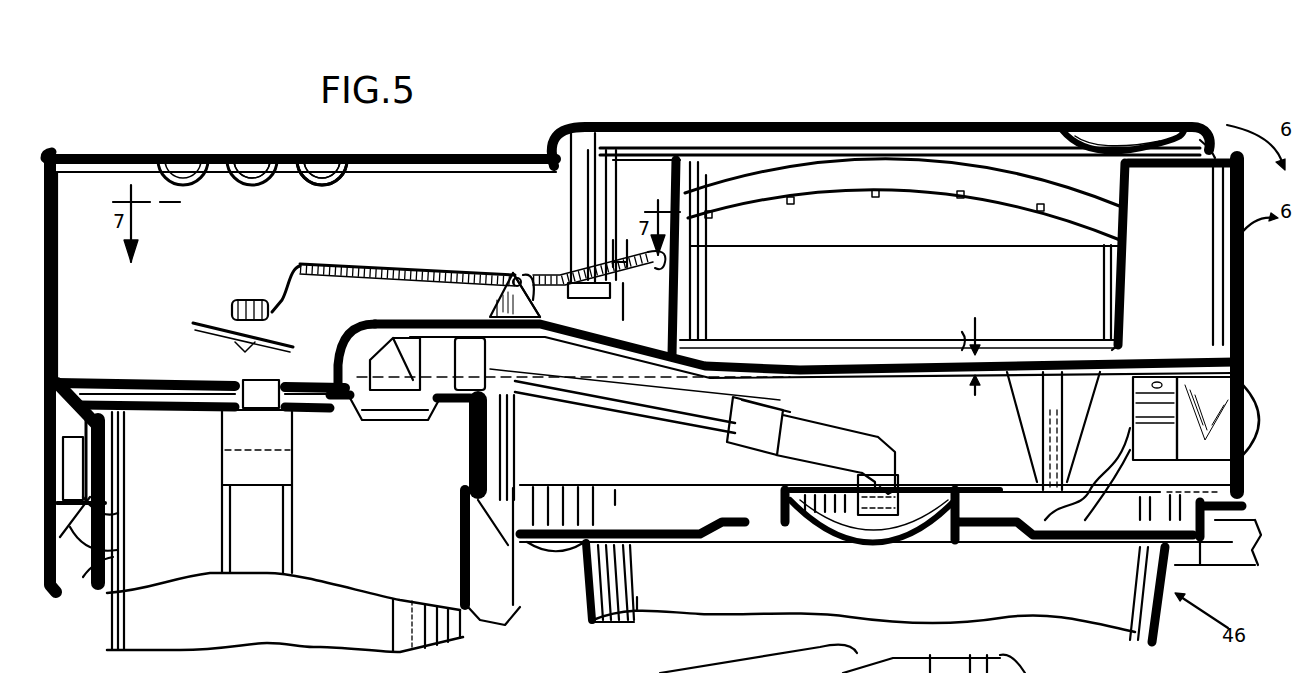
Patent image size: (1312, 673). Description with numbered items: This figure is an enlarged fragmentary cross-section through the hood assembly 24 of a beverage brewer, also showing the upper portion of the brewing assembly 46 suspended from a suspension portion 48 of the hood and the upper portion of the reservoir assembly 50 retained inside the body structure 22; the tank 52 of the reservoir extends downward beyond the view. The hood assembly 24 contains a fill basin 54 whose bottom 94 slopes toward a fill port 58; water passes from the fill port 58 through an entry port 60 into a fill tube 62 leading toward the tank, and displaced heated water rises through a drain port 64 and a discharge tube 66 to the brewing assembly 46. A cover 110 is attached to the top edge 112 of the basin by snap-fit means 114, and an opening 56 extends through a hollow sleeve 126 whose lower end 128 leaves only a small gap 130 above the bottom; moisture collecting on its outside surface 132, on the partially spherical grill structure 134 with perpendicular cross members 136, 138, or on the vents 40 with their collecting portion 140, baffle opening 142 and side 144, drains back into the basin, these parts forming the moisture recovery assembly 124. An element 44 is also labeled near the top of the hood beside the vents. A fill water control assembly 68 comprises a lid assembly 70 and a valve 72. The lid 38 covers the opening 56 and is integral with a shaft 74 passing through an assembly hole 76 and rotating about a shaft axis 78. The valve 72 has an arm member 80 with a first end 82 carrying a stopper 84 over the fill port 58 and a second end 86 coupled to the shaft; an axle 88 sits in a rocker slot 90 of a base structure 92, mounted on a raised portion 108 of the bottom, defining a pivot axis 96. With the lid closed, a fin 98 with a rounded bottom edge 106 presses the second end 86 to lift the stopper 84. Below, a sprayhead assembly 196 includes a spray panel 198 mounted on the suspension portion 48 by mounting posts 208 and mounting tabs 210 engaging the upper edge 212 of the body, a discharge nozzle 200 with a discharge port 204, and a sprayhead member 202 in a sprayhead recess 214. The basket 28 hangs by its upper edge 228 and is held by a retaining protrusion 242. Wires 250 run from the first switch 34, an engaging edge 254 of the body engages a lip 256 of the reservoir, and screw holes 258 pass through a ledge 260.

The body structure 22 is at (516, 618).
The hood assembly 24 is at (1199, 109).
The brewing basket 28 is at (1166, 609).
The first switch 34 is at (1206, 403).
The lid 38 is at (900, 120).
The vents 40 is at (249, 137).
The gasket 44 is at (1117, 113).
The brewing assembly 46 is at (1124, 118).
The suspension portion 48 is at (1227, 523).
The reservoir assembly 50 is at (260, 621).
The tank 52 is at (91, 531).
The fill basin 54 is at (301, 149).
The opening 56 is at (662, 222).
The fill port 58 is at (238, 380).
The entry port 60 is at (230, 447).
The fill tube 62 is at (231, 529).
The drain port 64 is at (400, 429).
The discharge tube 66 is at (635, 410).
The fill water control assembly 68 is at (407, 230).
The lid assembly 70 is at (850, 124).
The valve 72 is at (429, 257).
The shaft 74 is at (557, 208).
The assembly hole 76 is at (521, 143).
The shaft axis 78 is at (570, 269).
The arm member 80 is at (259, 286).
The first end 82 is at (222, 295).
The stopper 84 is at (215, 326).
The second end 86 is at (651, 280).
The axle 88 is at (515, 271).
The rocker slot 90 is at (548, 297).
The base structure 92 is at (463, 302).
The bottom 94 is at (646, 356).
The pivot axis 96 is at (490, 264).
The fin 98 is at (642, 177).
The bottom edge 106 is at (639, 289).
The raised portion 108 is at (366, 345).
The cover 110 is at (69, 135).
The top edge 112 is at (308, 120).
The snap-fit means 114 is at (74, 376).
The moisture recovery assembly 124 is at (1208, 325).
The hollow sleeve 126 is at (1079, 292).
The lower end 128 is at (1154, 333).
The gap 130 is at (952, 350).
The outside surface 132 is at (1156, 254).
The grill structure 134 is at (903, 146).
The cross members 136 is at (904, 218).
The cross members 138 is at (874, 213).
The collecting portion 140 is at (271, 190).
The baffle opening 142 is at (339, 201).
The side 144 is at (347, 182).
The sprayhead assembly 196 is at (876, 540).
The spray panel 198 is at (876, 533).
The discharge nozzle 200 is at (811, 440).
The sprayhead member 202 is at (872, 545).
The discharge port 204 is at (906, 482).
The mounting posts 208 is at (1092, 432).
The mounting tabs 210 is at (530, 447).
The upper edge 212 is at (563, 528).
The sprayhead recess 214 is at (808, 541).
The upper edge 228 is at (532, 544).
The retaining protrusion 242 is at (631, 582).
The wires 250 is at (1112, 468).
The engaging edge 254 is at (513, 380).
The lip 256 is at (515, 502).
The screw holes 258 is at (111, 483).
The ledge 260 is at (123, 552).